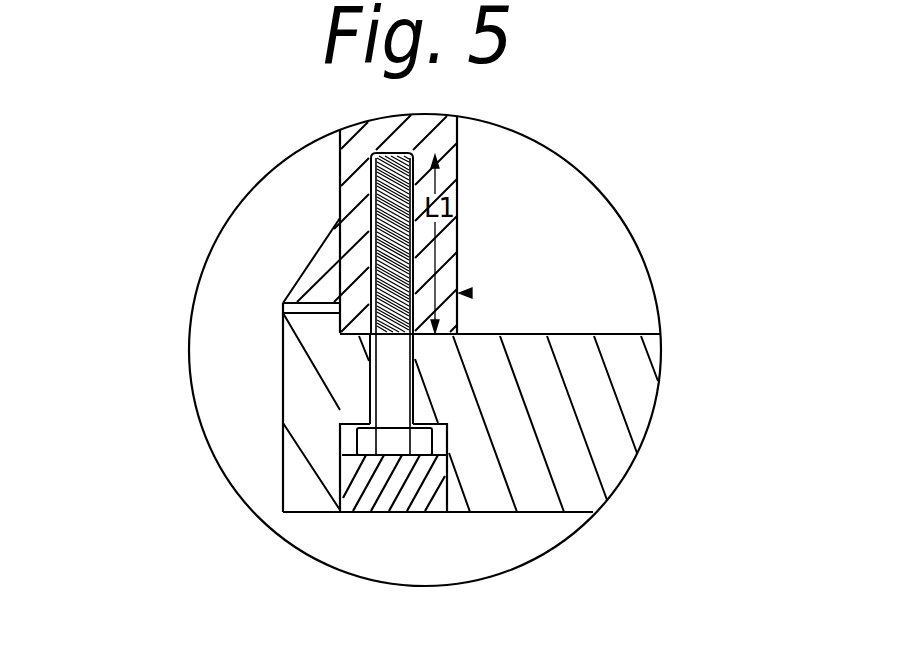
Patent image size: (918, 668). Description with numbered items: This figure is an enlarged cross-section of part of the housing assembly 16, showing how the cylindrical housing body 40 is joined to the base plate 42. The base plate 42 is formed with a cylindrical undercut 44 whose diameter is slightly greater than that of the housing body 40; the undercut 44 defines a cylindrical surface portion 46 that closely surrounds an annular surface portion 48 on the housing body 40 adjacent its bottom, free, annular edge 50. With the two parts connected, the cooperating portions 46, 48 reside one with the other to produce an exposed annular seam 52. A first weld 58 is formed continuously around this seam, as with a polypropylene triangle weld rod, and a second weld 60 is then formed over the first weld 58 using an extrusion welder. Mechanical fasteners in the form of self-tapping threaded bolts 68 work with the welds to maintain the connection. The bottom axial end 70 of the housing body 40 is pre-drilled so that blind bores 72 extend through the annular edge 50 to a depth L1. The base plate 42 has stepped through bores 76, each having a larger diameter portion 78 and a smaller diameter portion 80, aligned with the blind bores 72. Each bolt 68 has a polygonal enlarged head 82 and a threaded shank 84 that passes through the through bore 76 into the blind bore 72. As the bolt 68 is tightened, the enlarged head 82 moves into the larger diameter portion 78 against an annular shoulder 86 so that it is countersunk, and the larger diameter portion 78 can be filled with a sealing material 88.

The housing assembly 16 is at (340, 173).
The housing body 40 is at (338, 133).
The base plate 42 is at (557, 415).
The undercut 44 is at (558, 334).
The cylindrical surface portion 46 is at (313, 315).
The annular surface portion 48 is at (340, 335).
The annular edge 50 is at (345, 340).
The annular seam 52 is at (330, 287).
The first weld 58 is at (322, 256).
The second weld 60 is at (335, 224).
The bolt 68 is at (395, 266).
The bottom axial end 70 is at (472, 293).
The blind bore 72 is at (375, 286).
The through bore 76 is at (337, 512).
The larger diameter portion 78 is at (397, 490).
The smaller diameter portion 80 is at (373, 383).
The enlarged head 82 is at (393, 448).
The threaded shank 84 is at (402, 177).
The annular shoulder 86 is at (352, 434).
The sealing material 88 is at (340, 499).